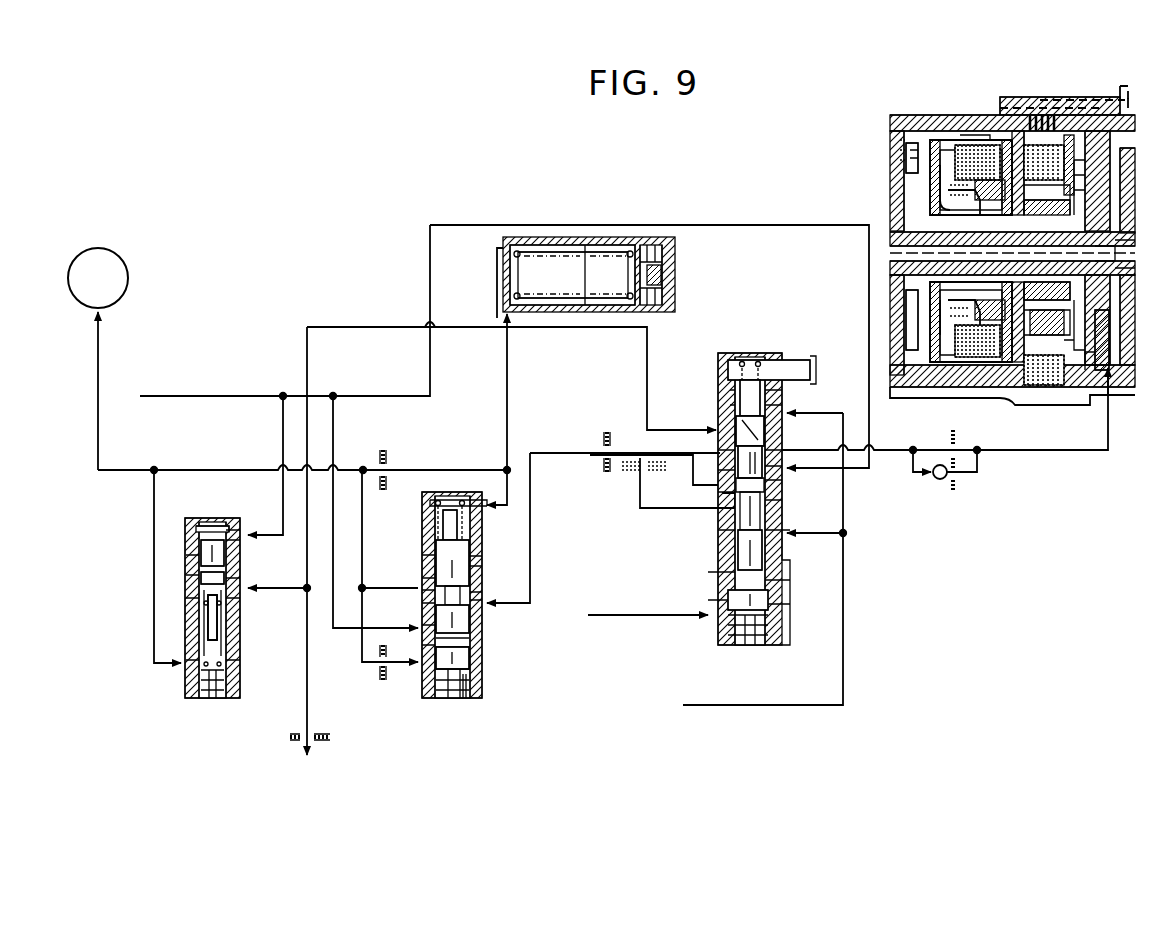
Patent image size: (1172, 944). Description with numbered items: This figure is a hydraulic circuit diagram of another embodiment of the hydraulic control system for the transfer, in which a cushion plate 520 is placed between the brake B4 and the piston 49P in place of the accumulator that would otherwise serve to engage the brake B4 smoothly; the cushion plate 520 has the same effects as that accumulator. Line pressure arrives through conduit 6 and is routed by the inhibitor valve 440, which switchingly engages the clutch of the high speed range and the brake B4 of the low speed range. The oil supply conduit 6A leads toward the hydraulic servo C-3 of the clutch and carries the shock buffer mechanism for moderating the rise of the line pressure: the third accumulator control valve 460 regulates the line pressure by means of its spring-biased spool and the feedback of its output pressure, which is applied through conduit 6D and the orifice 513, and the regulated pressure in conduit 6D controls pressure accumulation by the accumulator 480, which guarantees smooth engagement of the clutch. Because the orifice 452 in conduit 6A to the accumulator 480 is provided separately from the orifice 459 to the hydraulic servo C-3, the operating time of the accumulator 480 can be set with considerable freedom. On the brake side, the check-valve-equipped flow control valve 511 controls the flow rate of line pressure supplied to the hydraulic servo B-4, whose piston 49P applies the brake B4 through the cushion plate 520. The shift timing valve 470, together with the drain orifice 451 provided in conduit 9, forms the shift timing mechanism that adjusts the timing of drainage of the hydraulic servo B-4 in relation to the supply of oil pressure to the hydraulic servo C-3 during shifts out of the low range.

The hydraulic servo for the high speed range C-3 is at (98, 359).
The conduit 6 is at (233, 394).
The oil supply conduit 6A is at (211, 472).
The conduit 6D is at (388, 588).
The conduit 9 is at (578, 330).
The accumulator 480 is at (479, 238).
The orifice 452 is at (388, 460).
The orifice 459 is at (618, 443).
The check-valve-equipped flow control valve 511 is at (940, 486).
The orifice 513 is at (380, 672).
The drain orifice 451 is at (324, 732).
The piston 49P is at (1103, 393).
The brake B4 is at (990, 380).
The cushion plate 520 is at (1064, 386).
The hydraulic servo for the low speed range B-4 is at (1110, 384).
The inhibitor valve 440 is at (698, 630).
The third accumulator control valve 460 is at (440, 700).
The shift timing valve 470 is at (176, 680).